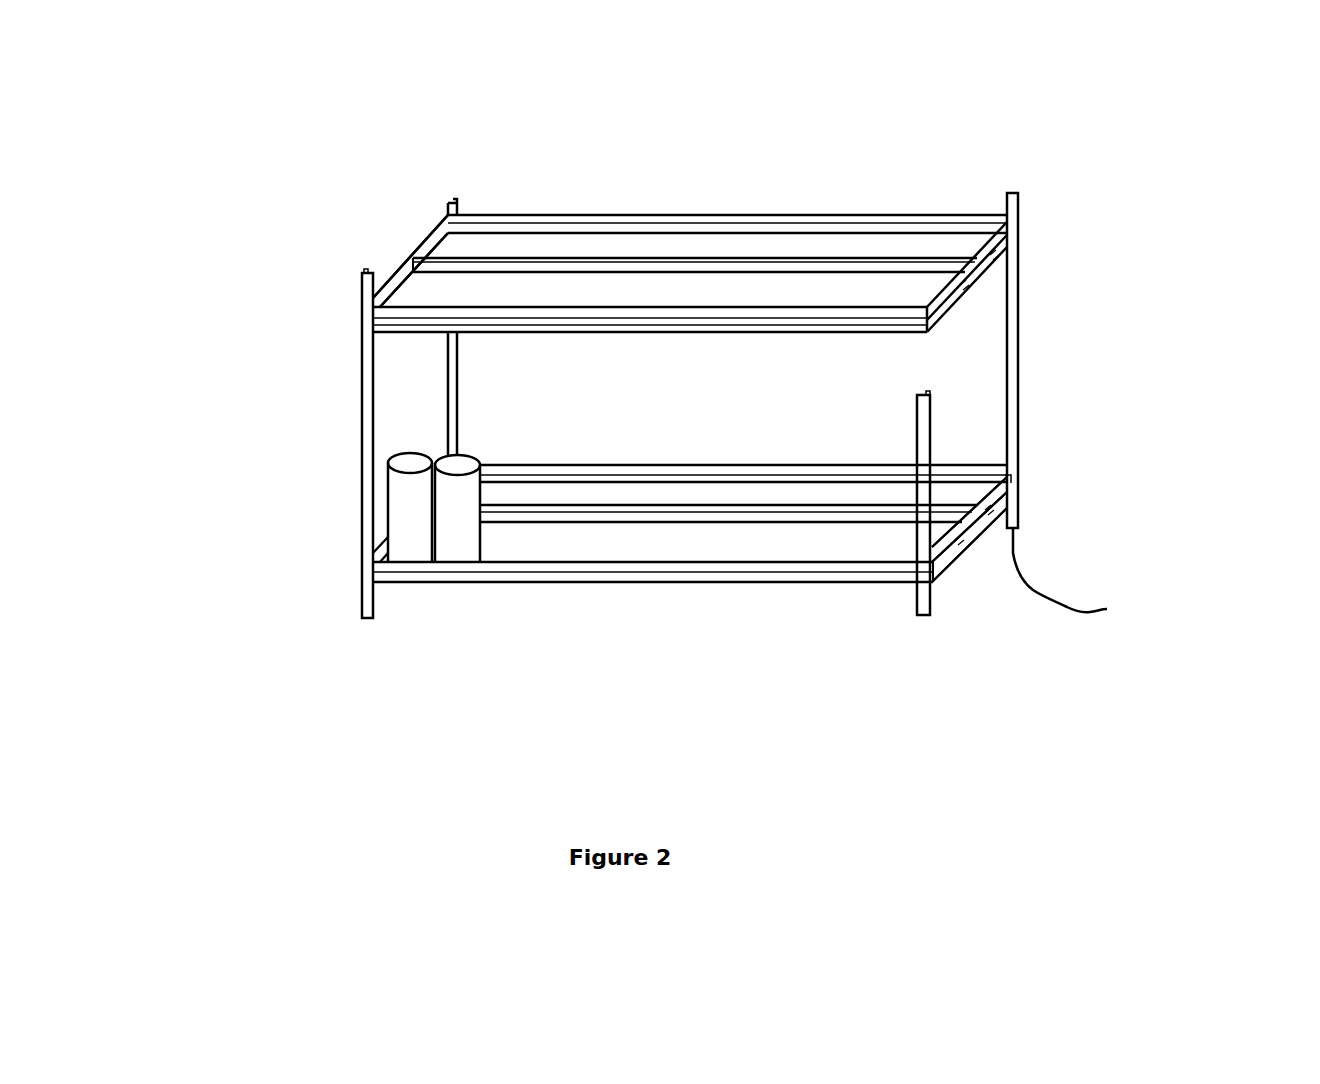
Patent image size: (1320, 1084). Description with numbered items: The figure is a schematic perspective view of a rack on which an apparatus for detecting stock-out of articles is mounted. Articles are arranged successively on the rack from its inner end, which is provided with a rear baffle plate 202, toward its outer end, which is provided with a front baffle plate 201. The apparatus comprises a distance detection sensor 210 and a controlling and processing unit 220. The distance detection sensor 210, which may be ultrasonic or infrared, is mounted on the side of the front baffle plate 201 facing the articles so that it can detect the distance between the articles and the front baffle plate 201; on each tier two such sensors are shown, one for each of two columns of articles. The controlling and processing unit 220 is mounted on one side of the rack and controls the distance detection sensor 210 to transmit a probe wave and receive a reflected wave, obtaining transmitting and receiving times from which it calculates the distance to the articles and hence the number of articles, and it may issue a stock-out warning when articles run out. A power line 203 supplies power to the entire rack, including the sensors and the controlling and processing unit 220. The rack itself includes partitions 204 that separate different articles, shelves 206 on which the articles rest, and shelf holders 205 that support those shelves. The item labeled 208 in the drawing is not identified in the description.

The front baffle plate 201 is at (973, 266).
The rear baffle plate 202 is at (397, 283).
The power line 203 is at (1065, 600).
The partitions 204 is at (680, 575).
The shelf holders 205 is at (365, 447).
The shelves 206 is at (558, 245).
The containers 208 is at (412, 523).
The distance detection sensor 210 is at (957, 543).
The controlling and processing unit 220 is at (1015, 472).